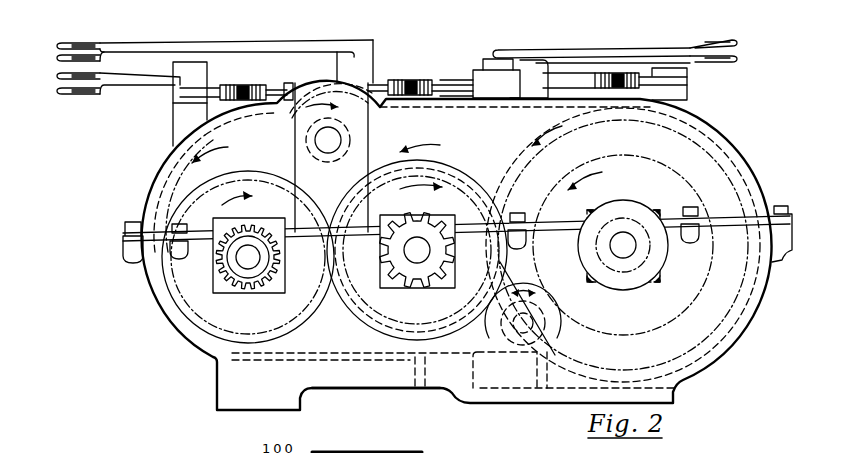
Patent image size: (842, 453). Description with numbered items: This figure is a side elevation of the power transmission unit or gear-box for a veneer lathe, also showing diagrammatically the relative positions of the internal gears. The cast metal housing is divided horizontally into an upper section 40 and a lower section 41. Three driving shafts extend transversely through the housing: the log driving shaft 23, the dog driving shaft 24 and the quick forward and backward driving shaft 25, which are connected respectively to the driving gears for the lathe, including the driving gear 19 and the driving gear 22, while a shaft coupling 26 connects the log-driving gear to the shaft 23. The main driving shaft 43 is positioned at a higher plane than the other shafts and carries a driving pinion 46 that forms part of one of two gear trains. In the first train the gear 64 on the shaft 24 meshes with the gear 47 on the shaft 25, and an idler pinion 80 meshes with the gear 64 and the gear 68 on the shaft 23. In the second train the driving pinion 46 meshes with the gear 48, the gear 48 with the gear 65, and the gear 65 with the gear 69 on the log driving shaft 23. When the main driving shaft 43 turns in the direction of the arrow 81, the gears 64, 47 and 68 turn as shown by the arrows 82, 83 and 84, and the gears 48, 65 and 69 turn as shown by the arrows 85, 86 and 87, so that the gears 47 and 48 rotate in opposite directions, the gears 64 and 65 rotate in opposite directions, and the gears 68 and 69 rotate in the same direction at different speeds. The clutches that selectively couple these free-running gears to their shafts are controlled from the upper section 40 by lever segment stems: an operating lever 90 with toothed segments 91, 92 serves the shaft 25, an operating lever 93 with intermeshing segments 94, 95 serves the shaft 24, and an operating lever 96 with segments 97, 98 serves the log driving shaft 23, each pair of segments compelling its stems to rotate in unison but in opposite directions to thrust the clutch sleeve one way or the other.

The driving gear 19 is at (473, 254).
The driving gear 22 is at (282, 266).
The driving shaft 23 is at (630, 250).
The driving shaft 24 is at (416, 256).
The driving shaft 25 is at (243, 260).
The shaft coupling 26 is at (643, 212).
The upper section 40 is at (457, 234).
The lower section 41 is at (324, 376).
The main driving shaft 43 is at (334, 138).
The driving gear 46 is at (372, 116).
The clutch gear 47 is at (300, 313).
The clutch gear 48 is at (310, 322).
The clutch gear 64 is at (452, 340).
The clutch gear 65 is at (376, 318).
The gear 68 is at (633, 154).
The clutch gear 69 is at (722, 171).
The idler pinion 80 is at (558, 334).
The arrow 81 is at (320, 101).
The arrow 82 is at (420, 145).
The arrow 83 is at (240, 196).
The arrow 84 is at (585, 184).
The arrow 85 is at (210, 154).
The arrow 86 is at (423, 184).
The arrow 87 is at (541, 133).
The operating lever 90 is at (132, 88).
The toothed segment 91 is at (236, 81).
The toothed segment 92 is at (270, 78).
The operating lever 93 is at (170, 48).
The toothed segment 94 is at (395, 81).
The toothed segment 95 is at (442, 80).
The operating lever 96 is at (621, 50).
The toothed segment 97 is at (598, 92).
The toothed segment 98 is at (645, 92).